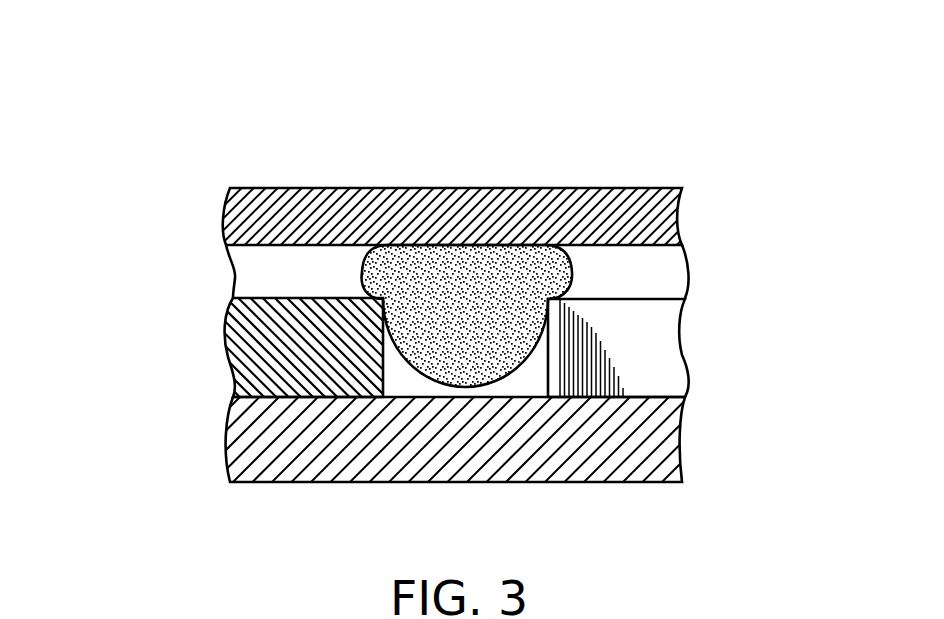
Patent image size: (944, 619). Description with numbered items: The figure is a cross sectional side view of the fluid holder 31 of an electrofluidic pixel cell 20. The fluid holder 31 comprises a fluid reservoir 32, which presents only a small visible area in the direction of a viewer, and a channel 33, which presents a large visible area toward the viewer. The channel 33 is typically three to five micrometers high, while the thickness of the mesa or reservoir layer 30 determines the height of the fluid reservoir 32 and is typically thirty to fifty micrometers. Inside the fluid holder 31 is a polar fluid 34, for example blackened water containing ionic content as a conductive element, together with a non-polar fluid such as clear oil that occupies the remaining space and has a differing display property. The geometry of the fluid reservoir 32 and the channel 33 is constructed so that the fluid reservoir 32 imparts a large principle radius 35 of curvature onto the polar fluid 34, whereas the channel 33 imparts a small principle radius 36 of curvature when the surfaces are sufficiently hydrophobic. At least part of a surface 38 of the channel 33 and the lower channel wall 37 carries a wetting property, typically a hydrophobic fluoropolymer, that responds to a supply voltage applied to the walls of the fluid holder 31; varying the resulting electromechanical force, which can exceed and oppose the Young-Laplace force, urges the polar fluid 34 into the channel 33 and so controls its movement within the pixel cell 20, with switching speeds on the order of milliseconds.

The pixel cell 20 is at (243, 543).
The mesa or reservoir layer 30 is at (652, 352).
The fluid holder 31 is at (191, 249).
The fluid reservoir 32 is at (428, 362).
The channel 33 is at (292, 273).
The polar fluid 34 is at (469, 291).
The large principle radius of curvature 35 is at (517, 370).
The small principle radius of curvature 36 is at (566, 272).
The lower channel wall 37 is at (338, 298).
The surface of the channel 38 is at (272, 210).